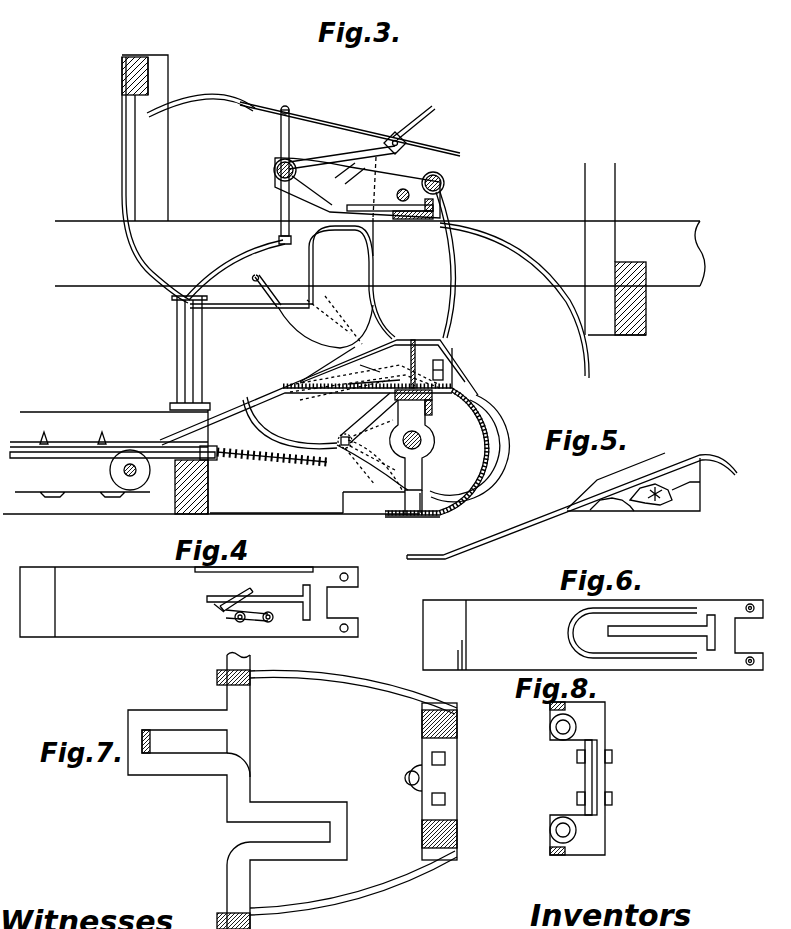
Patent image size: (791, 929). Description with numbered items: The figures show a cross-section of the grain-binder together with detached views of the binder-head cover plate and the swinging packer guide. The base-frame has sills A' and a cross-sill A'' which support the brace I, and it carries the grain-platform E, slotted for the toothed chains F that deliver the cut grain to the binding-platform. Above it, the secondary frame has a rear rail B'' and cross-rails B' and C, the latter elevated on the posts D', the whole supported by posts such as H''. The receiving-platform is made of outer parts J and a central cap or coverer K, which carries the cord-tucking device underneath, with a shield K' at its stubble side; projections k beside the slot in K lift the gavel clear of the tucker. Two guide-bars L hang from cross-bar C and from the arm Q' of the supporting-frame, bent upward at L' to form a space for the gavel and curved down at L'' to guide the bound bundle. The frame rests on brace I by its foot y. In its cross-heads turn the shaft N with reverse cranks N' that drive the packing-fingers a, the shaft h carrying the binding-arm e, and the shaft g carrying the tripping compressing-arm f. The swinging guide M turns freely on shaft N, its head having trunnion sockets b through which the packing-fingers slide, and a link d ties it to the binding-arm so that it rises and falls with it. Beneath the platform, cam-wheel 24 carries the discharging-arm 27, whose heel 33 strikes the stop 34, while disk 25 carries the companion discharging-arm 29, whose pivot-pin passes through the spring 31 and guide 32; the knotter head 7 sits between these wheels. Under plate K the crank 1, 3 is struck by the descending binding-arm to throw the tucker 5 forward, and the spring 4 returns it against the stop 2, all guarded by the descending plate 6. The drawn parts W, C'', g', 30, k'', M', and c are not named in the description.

In FIG. 3, the cross-rail C is at (281, 137).
In FIG. 3, the posts D' is at (158, 138).
In FIG. 3, the guide-bars L is at (144, 180).
In FIG. 3, the packing-fingers a is at (219, 193).
In FIG. 3, the reverse cranks N' is at (273, 171).
In FIG. 7, the reverse cranks N' is at (256, 781).
In FIG. 3, the transmitting-shaft N is at (268, 175).
In FIG. 7, the transmitting-shaft N is at (237, 791).
In FIG. 3, the swinging guide M is at (342, 160).
In FIG. 7, the swinging guide M is at (337, 796).
In FIG. 8, the swinging guide M is at (587, 778).
In FIG. 3, the pivot or trunnion sockets b is at (350, 129).
In FIG. 7, the pivot or trunnion sockets b is at (427, 779).
In FIG. 8, the pivot or trunnion sockets b is at (555, 778).
In FIG. 3, the link d is at (380, 170).
In FIG. 3, the shaft h is at (409, 190).
In FIG. 3, the shaft g is at (445, 183).
In FIG. 3, the arm of binder-mechanism supporting-frame Q' is at (420, 226).
In FIG. 3, the rear rail B'' is at (380, 253).
In FIG. 3, the binding-arm e is at (292, 282).
In FIG. 3, the tripping compressing-arm f is at (455, 265).
In FIG. 3, the bend of guide-bars L' is at (334, 317).
In FIG. 3, the downward curve of guide-bars L'' is at (514, 300).
In FIG. 3, the cross-rail B' is at (625, 252).
In FIG. 3, the post H'' is at (198, 353).
In FIG. 3, the main frame sill A' is at (211, 446).
In FIG. 3, the grain-platform E is at (60, 417).
In FIG. 3, the chains F is at (100, 426).
In FIG. 3, the wheel W is at (108, 472).
In FIG. 3, the cross-sill A'' is at (208, 487).
In FIG. 3, the brace I is at (276, 497).
In FIG. 3, the foot y is at (370, 497).
In FIG. 3, the binder-head cap or coverer K is at (306, 410).
In FIG. 5, the binder-head cap or coverer K is at (572, 507).
In FIG. 4, the binder-head cap or coverer K is at (189, 602).
In FIG. 6, the binder-head cap or coverer K is at (593, 635).
In FIG. 3, the projections k is at (313, 328).
In FIG. 5, the projections k is at (616, 481).
In FIG. 6, the projections k is at (632, 633).
In FIG. 3, the descending plate 6 is at (380, 370).
In FIG. 5, the descending plate 6 is at (640, 484).
In FIG. 4, the descending plate 6 is at (254, 562).
In FIG. 3, the knotter head or frame 7 is at (460, 375).
In FIG. 3, the platform part J is at (374, 376).
In FIG. 3, the stop 34 is at (470, 397).
In FIG. 3, the shield K' is at (447, 451).
In FIG. 3, the discharging-arm 27 is at (433, 513).
In FIG. 3, the lever C'' is at (412, 452).
In FIG. 3, the pivot g' is at (426, 440).
In FIG. 3, the cam-wheel 24 is at (369, 418).
In FIG. 3, the heel of discharging-arm 33 is at (360, 436).
In FIG. 3, the discharging-arm 29 is at (290, 423).
In FIG. 3, the arm 30 is at (372, 467).
In FIG. 3, the disk or cam-wheel 25 is at (375, 465).
In FIG. 3, the guide 32 is at (216, 442).
In FIG. 3, the spring 31 is at (272, 445).
In FIG. 5, the spring 4 is at (651, 494).
In FIG. 4, the spring 4 is at (247, 623).
In FIG. 5, the tucker 5 is at (686, 491).
In FIG. 4, the tucker 5 is at (275, 620).
In FIG. 5, the crank 1 is at (620, 513).
In FIG. 4, the crank 1 is at (238, 598).
In FIG. 4, the stop 2 is at (210, 610).
In FIG. 4, the crank 3 is at (233, 624).
In FIG. 4, the T slot k'' is at (258, 598).
In FIG. 6, the T slot k'' is at (673, 625).
In FIG. 7, the bracket M' is at (454, 781).
In FIG. 8, the bracket M' is at (580, 777).
In FIG. 7, the pivot hole c is at (401, 778).